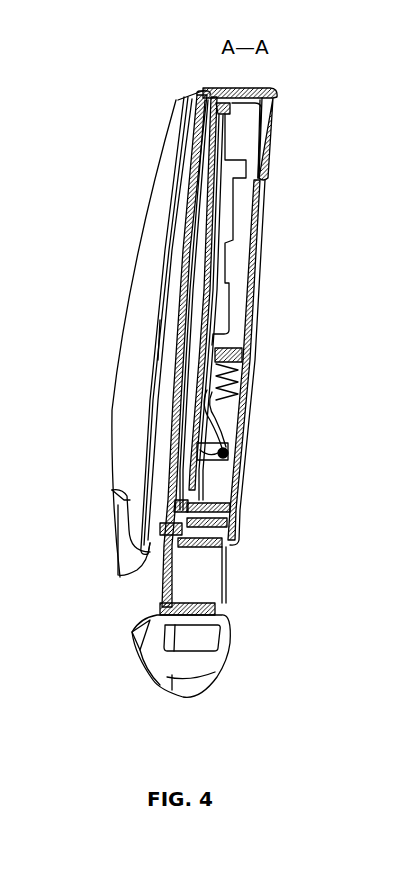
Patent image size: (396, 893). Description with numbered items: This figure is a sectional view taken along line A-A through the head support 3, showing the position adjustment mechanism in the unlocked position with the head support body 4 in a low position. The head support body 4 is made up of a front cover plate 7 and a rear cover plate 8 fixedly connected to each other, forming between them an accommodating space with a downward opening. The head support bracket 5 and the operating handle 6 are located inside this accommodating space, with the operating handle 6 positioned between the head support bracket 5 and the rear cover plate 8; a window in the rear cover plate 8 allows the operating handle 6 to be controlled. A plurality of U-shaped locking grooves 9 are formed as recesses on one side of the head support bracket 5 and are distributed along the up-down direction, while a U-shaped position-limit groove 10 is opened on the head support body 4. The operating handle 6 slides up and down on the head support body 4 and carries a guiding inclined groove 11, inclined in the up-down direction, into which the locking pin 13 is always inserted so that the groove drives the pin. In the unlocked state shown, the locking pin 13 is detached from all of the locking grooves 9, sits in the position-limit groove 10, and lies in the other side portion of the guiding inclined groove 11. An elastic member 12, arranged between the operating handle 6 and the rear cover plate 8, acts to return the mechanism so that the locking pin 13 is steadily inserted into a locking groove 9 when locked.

The head support 3 is at (133, 131).
The head support body 4 is at (262, 323).
The head support bracket 5 is at (220, 307).
The operating handle 6 is at (240, 243).
The front cover plate 7 is at (183, 313).
The rear cover plate 8 is at (267, 143).
The locking groove 9 is at (200, 205).
The position-limit groove 10 is at (192, 440).
The guiding inclined groove 11 is at (223, 433).
The elastic member 12 is at (240, 372).
The locking pin 13 is at (230, 452).